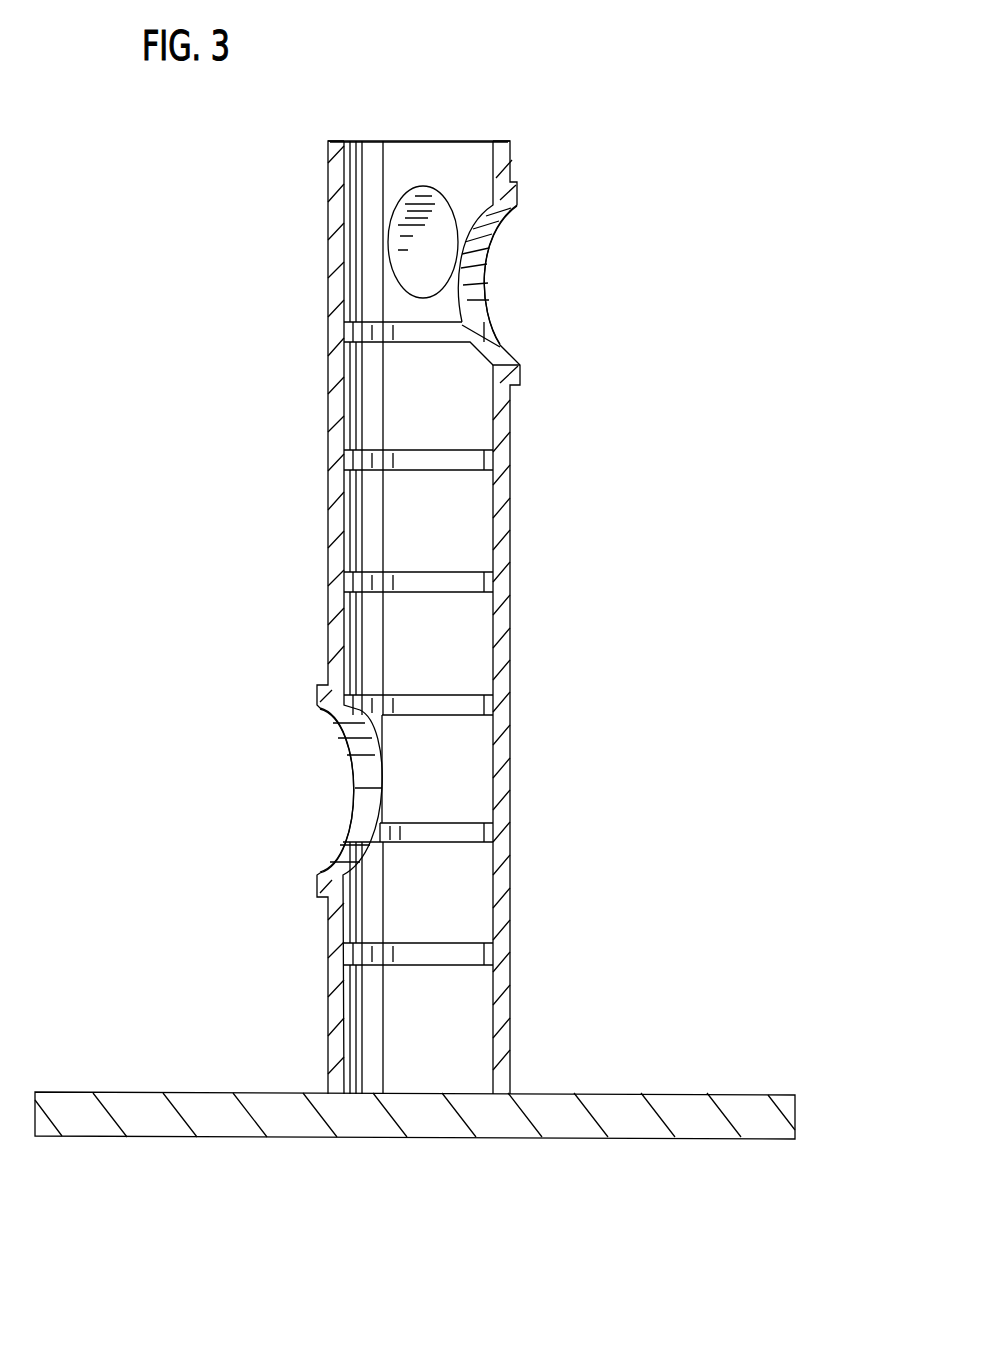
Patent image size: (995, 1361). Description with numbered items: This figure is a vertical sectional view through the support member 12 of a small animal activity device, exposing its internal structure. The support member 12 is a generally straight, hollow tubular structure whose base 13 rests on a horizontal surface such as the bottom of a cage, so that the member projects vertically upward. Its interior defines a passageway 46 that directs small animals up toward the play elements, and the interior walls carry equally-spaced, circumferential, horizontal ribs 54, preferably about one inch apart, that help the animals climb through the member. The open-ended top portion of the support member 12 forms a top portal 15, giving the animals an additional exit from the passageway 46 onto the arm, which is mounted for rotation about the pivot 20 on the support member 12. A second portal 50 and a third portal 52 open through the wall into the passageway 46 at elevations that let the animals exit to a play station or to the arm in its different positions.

The support member 12 is at (328, 373).
The base 13 is at (797, 1117).
The top portal 15 is at (383, 141).
The pivot 20 is at (417, 238).
The passageway 46 is at (412, 1042).
The second portal 50 is at (364, 772).
The third portal 52 is at (485, 287).
The ribs 54 is at (455, 330).